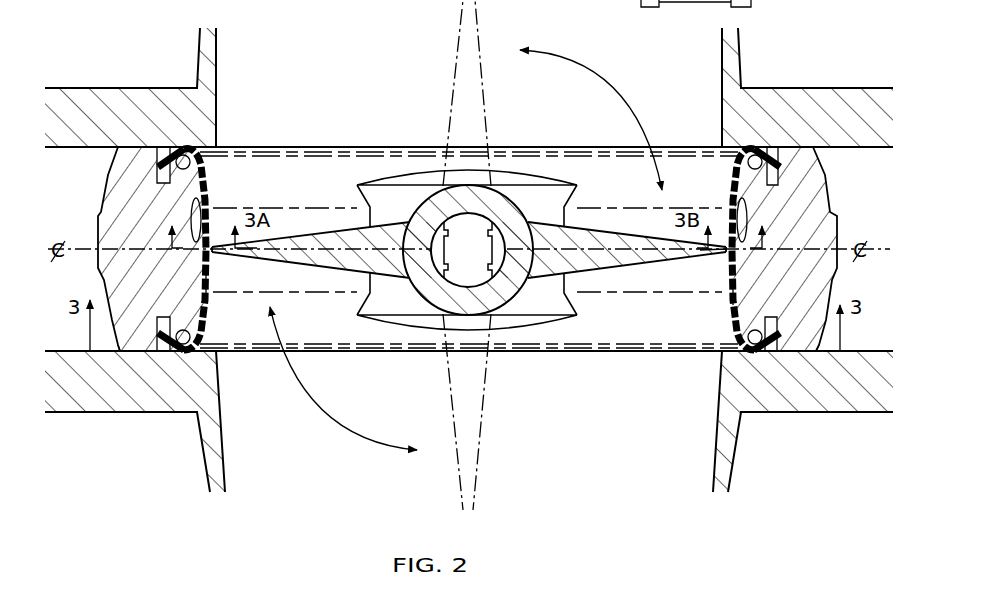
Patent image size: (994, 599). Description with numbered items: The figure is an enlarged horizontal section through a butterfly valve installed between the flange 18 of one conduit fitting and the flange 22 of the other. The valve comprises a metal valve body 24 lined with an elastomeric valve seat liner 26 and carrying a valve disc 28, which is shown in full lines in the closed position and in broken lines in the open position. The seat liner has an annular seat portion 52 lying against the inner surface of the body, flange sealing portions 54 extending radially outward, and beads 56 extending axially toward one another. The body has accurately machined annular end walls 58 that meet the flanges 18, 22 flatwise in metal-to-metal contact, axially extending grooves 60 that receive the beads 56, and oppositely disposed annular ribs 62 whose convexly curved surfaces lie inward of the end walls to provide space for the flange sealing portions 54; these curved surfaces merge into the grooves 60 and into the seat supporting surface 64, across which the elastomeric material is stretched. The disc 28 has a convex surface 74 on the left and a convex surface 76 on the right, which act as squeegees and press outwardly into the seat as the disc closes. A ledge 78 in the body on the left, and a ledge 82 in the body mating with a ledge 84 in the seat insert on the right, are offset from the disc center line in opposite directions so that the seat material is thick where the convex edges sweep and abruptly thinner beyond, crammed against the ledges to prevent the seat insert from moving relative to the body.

The flange 18 is at (101, 410).
The flange 22 is at (71, 93).
The valve body 24 is at (106, 273).
The valve seat liner 26 is at (273, 168).
The valve disc 28 is at (356, 229).
The annular seat portion 52 is at (210, 304).
The flange sealing portions 54 is at (184, 147).
The beads 56 is at (162, 168).
The annular end walls 58 is at (126, 352).
The axially extending grooves 60 is at (792, 187).
The annular ribs 62 is at (199, 159).
The seat supporting surface 64 is at (209, 292).
The convex surface 74 is at (228, 256).
The convex surface 76 is at (726, 253).
The ledge 78 is at (206, 196).
The ledge 82 is at (731, 297).
The mating ledge 84 is at (729, 224).